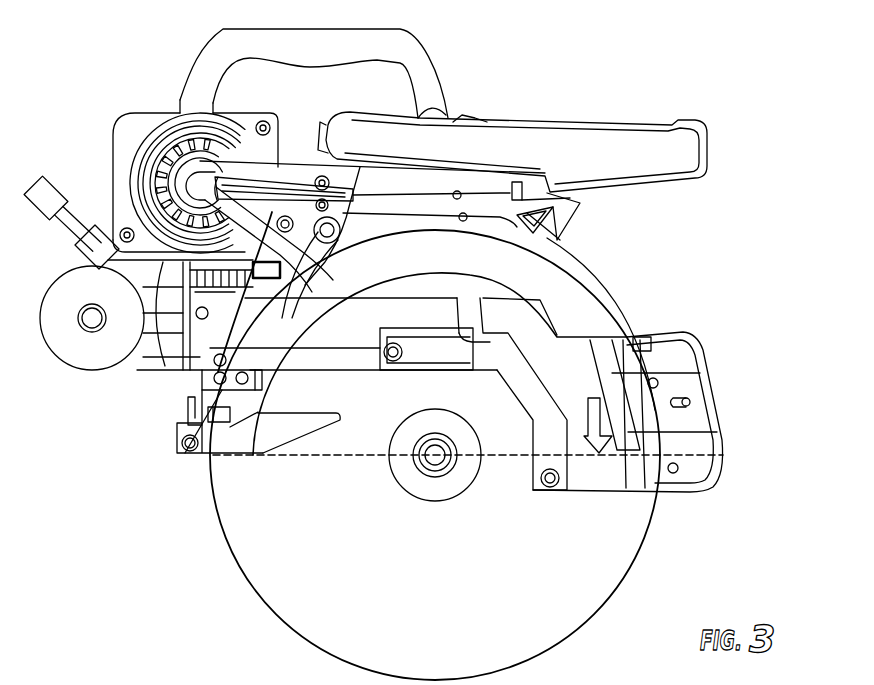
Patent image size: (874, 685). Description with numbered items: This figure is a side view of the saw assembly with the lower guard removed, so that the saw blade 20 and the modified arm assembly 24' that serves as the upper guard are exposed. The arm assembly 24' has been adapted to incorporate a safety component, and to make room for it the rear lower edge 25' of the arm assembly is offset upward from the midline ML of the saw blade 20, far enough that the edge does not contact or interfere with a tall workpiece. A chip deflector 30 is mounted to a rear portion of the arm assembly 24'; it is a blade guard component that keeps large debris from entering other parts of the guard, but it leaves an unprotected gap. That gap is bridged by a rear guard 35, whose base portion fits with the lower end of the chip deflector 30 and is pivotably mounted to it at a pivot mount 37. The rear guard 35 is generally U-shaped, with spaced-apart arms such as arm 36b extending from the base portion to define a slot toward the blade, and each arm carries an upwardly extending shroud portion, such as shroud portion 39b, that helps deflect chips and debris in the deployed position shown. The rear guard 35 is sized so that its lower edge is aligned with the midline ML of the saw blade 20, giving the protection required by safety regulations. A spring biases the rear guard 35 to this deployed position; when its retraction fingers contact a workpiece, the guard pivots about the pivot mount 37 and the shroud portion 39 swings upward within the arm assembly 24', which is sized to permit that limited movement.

The saw blade 20 is at (630, 533).
The shroud portion 39 is at (583, 290).
The shroud portion 39b is at (256, 420).
The arm assembly 24' is at (628, 386).
The rear lower edge 25' is at (349, 394).
The chip deflector 30 is at (186, 408).
The pivot mount 37 is at (223, 422).
The rear guard 35 is at (232, 452).
The arm 36b is at (331, 423).
The midline ML is at (505, 458).